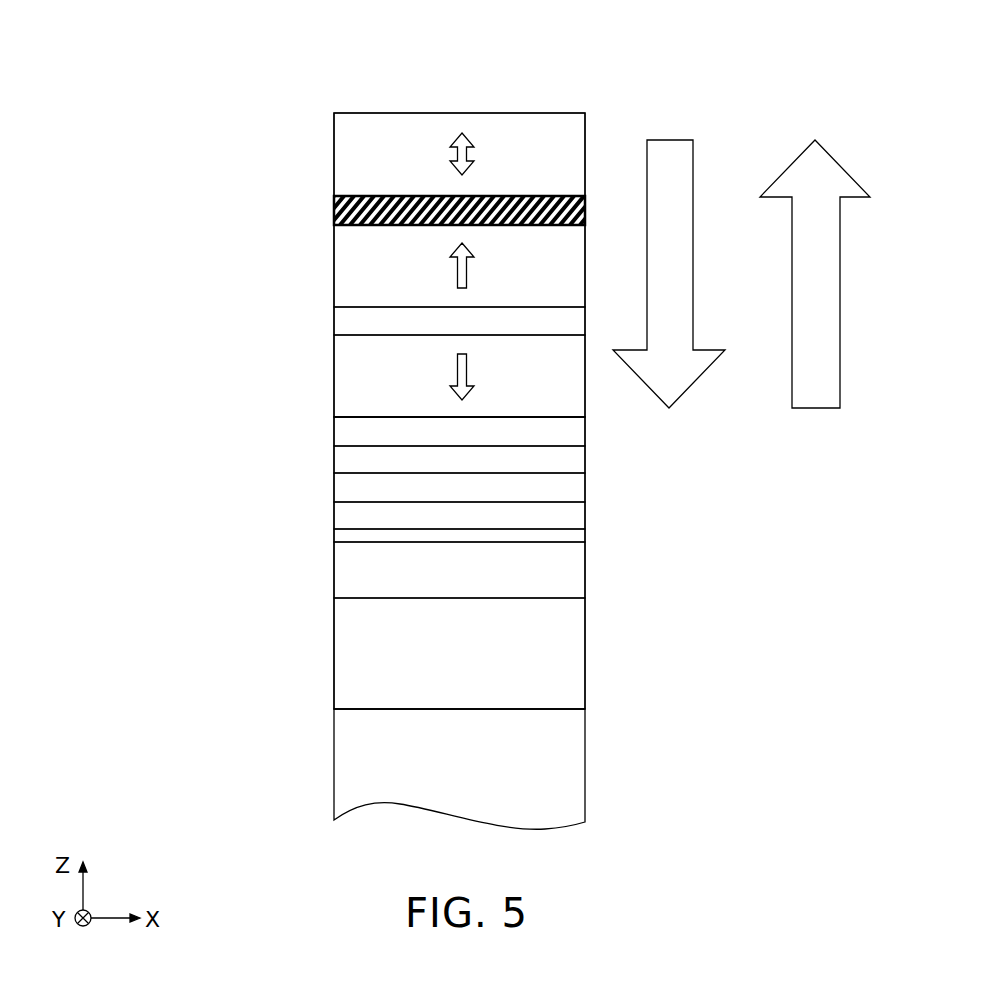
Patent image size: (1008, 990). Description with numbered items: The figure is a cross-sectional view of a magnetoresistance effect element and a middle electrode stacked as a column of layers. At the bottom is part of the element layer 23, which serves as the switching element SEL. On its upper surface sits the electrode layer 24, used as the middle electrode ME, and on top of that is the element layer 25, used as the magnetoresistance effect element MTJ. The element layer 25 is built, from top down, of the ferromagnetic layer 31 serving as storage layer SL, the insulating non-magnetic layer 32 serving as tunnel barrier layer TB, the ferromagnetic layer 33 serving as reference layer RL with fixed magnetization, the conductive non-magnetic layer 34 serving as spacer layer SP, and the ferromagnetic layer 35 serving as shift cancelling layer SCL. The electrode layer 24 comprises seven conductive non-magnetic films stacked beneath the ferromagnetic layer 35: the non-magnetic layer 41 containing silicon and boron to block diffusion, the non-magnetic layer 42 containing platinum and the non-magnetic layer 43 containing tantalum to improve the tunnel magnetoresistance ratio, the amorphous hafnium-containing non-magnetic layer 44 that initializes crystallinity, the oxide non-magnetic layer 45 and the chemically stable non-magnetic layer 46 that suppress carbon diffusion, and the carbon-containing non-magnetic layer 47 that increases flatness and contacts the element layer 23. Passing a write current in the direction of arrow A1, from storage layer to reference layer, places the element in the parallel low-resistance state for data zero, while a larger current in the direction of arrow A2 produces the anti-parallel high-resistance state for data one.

The element layer 23 is at (334, 769).
The electrode layer 24 is at (188, 418).
The element layer 25 is at (188, 113).
The ferromagnetic layer 31 is at (334, 159).
The non-magnetic layer 32 is at (334, 212).
The ferromagnetic layer 33 is at (334, 266).
The non-magnetic layer 34 is at (334, 321).
The ferromagnetic layer 35 is at (334, 377).
The non-magnetic layer 41 is at (334, 432).
The non-magnetic layer 42 is at (334, 459).
The non-magnetic layer 43 is at (334, 487).
The non-magnetic layer 44 is at (334, 515).
The non-magnetic layer 45 is at (334, 540).
The non-magnetic layer 46 is at (334, 572).
The non-magnetic layer 47 is at (334, 656).
The arrow A1 is at (668, 138).
The arrow A2 is at (802, 148).